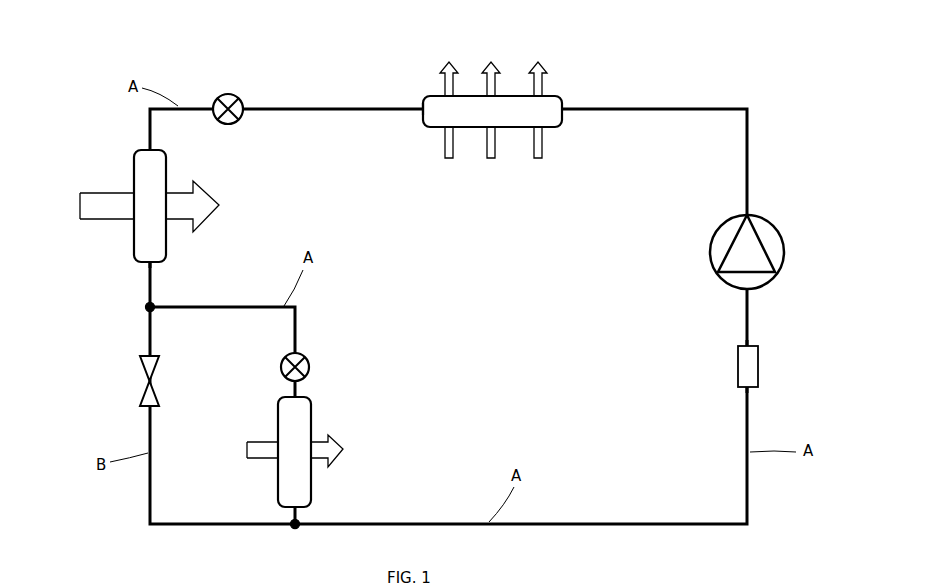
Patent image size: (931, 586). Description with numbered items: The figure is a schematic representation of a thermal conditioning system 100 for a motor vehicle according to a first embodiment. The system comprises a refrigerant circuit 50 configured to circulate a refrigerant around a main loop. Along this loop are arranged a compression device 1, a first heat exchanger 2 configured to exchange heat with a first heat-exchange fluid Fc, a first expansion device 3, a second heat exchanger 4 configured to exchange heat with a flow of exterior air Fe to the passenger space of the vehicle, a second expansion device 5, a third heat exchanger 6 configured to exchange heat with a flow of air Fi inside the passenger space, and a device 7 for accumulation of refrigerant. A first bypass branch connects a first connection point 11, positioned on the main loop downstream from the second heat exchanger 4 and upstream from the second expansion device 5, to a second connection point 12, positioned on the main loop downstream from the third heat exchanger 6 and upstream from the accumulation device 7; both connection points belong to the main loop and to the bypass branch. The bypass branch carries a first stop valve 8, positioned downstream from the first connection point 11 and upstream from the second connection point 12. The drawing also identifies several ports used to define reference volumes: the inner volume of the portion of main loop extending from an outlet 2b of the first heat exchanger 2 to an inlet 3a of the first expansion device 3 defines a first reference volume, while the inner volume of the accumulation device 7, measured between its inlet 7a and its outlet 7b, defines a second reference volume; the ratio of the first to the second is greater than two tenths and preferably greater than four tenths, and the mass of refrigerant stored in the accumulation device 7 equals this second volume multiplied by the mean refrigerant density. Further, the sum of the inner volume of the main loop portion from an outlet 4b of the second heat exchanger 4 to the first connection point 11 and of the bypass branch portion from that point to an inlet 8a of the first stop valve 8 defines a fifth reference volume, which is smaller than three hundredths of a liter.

The thermal conditioning system 100 is at (519, 50).
The refrigerant circuit 50 is at (737, 534).
The compression device 1 is at (750, 247).
The first heat exchanger 2 is at (528, 113).
The outlet of the first heat exchanger 2b is at (423, 103).
The first heat-exchange fluid Fc is at (453, 143).
The first expansion device 3 is at (243, 102).
The inlet of the first expansion device 3a is at (240, 120).
The second heat exchanger 4 is at (148, 175).
The outlet of the second heat exchanger 4b is at (153, 262).
The flow of exterior air Fe is at (110, 205).
The first connection point 11 is at (145, 308).
The first stop valve 8 is at (140, 400).
The inlet of the first stop valve 8a is at (152, 352).
The second expansion device 5 is at (310, 366).
The third heat exchanger 6 is at (290, 413).
The flow of air inside the passenger space Fi is at (340, 445).
The second connection point 12 is at (299, 526).
The accumulation device 7 is at (745, 368).
The outlet of the accumulation device 7b is at (755, 343).
The inlet of the accumulation device 7a is at (750, 390).